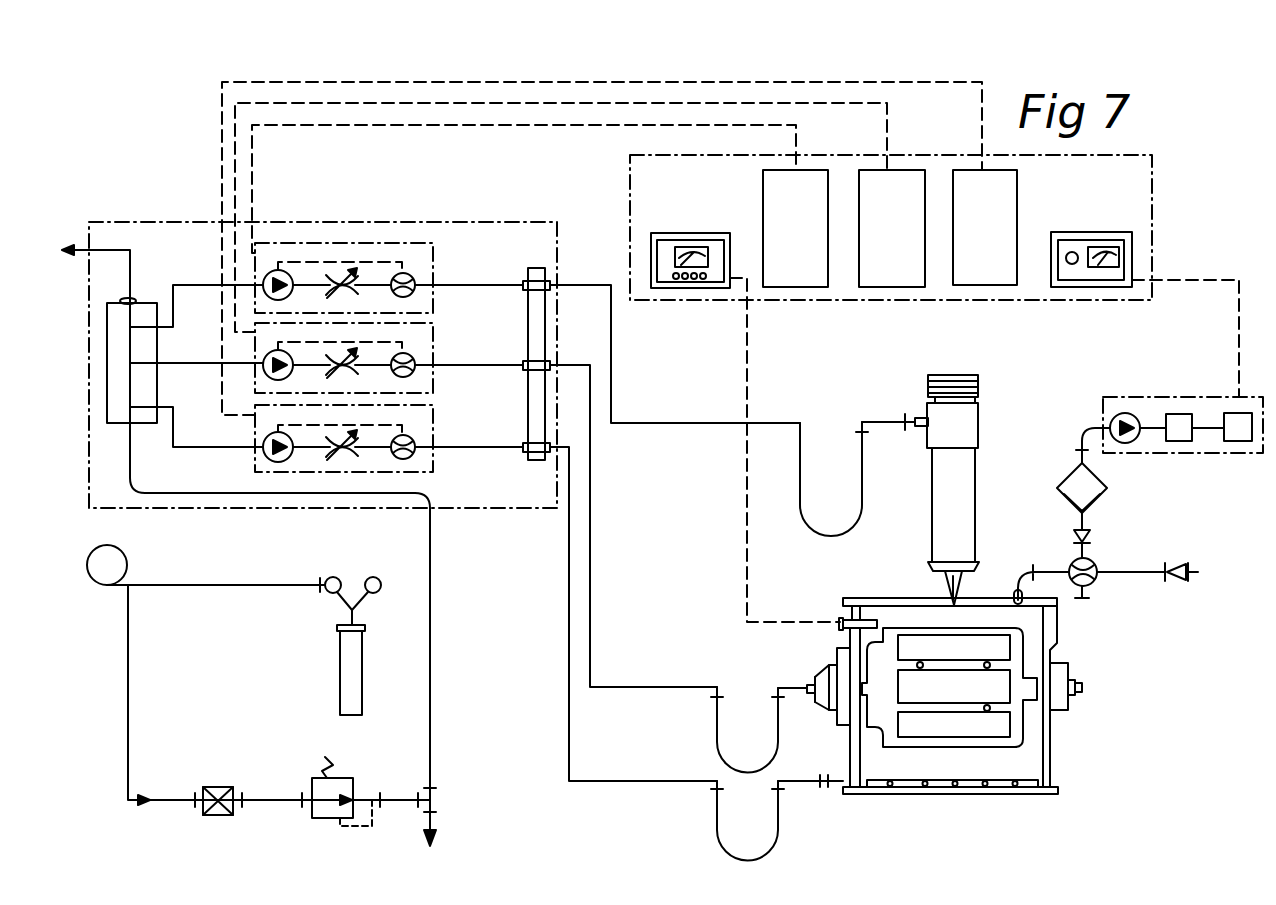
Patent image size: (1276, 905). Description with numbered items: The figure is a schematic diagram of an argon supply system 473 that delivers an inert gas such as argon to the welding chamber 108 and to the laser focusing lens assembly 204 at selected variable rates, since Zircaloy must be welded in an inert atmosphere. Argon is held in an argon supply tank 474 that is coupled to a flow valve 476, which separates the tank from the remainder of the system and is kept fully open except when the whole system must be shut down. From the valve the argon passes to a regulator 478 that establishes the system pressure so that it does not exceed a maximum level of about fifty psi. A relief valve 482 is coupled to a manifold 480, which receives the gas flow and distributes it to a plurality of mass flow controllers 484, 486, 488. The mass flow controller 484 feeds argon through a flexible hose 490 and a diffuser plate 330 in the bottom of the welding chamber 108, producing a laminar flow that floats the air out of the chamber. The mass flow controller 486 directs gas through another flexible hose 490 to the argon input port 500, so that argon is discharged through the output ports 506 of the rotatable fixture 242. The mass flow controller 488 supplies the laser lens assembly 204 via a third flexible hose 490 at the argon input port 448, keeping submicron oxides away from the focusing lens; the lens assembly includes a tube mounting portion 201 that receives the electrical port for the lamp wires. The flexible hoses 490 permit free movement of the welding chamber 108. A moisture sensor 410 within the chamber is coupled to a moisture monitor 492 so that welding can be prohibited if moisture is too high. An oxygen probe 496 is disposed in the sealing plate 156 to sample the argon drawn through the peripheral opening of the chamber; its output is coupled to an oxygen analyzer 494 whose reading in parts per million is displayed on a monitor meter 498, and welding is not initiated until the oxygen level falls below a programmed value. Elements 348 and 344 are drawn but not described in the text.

The argon supply system 473 is at (163, 121).
The manifold 480 is at (103, 320).
The relief valve 482 is at (135, 300).
The mass flow controller 484 is at (434, 436).
The mass flow controller 486 is at (433, 346).
The mass flow controller 488 is at (433, 270).
The flexible hose 490 is at (806, 503).
The moisture monitor 492 is at (698, 236).
The oxygen analyzer 494 is at (1166, 397).
The oxygen probe 496 is at (1008, 590).
The monitor meter 498 is at (1102, 232).
The argon input port 448 is at (907, 418).
The tube mounting portion 201 is at (980, 425).
The laser focusing lens assembly 204 is at (922, 494).
The moisture sensor 410 is at (868, 600).
The sealing plate 156 is at (897, 600).
The welding chamber 108 is at (838, 608).
The argon input port 500 is at (809, 684).
The output ports 506 is at (957, 690).
The drive shaft 348 is at (825, 702).
The rotatable fixture 242 is at (987, 748).
The bearing 344 is at (1068, 672).
The diffuser plate 330 is at (1015, 776).
The argon supply tank 474 is at (345, 647).
The flow valve 476 is at (217, 787).
The regulator 478 is at (345, 780).